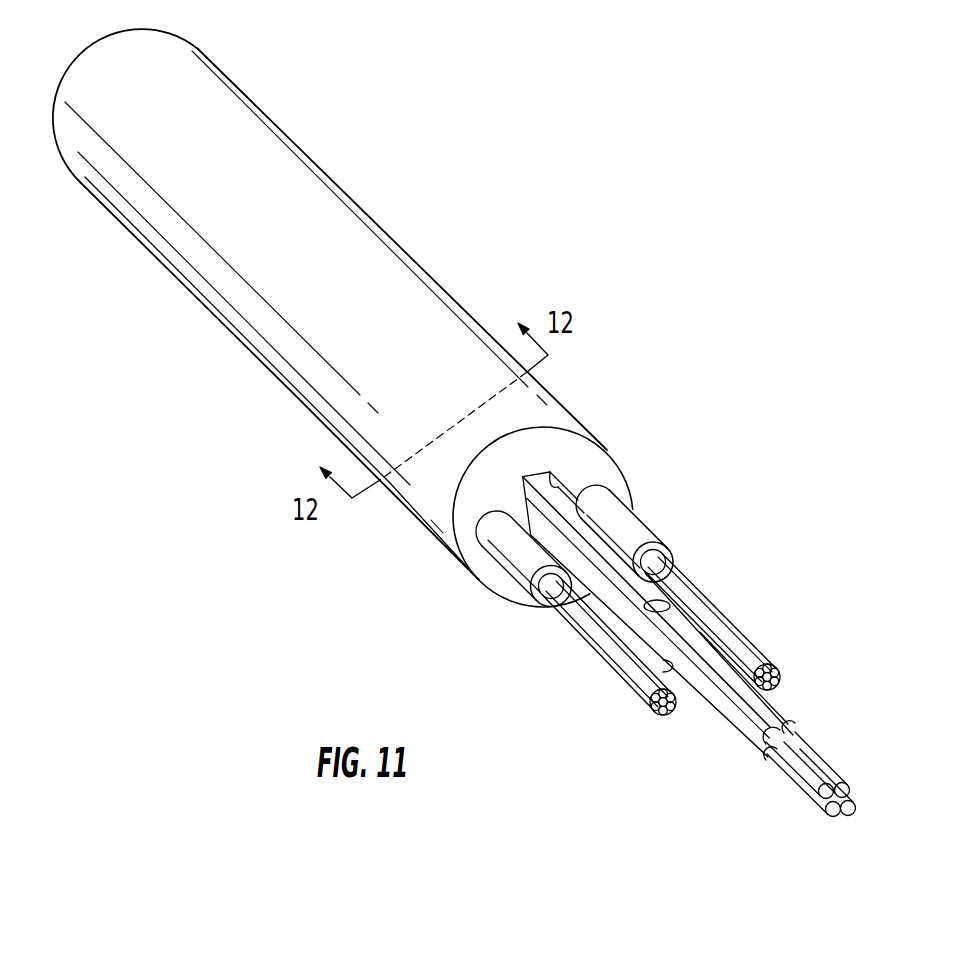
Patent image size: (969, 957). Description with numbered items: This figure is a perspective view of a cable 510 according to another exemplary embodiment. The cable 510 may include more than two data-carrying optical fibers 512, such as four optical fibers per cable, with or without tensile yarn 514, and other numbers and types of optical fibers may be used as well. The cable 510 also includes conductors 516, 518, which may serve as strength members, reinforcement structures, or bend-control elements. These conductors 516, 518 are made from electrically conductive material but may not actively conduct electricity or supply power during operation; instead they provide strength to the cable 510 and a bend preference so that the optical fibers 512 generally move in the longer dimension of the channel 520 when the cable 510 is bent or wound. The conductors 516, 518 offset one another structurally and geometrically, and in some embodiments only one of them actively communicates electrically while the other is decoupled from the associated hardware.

The cable 510 is at (379, 315).
The optical fibers 512 is at (754, 752).
The tensile yarn 514 is at (698, 609).
The conductor 516 is at (576, 613).
The conductor 518 is at (694, 587).
The channel 520 is at (659, 590).